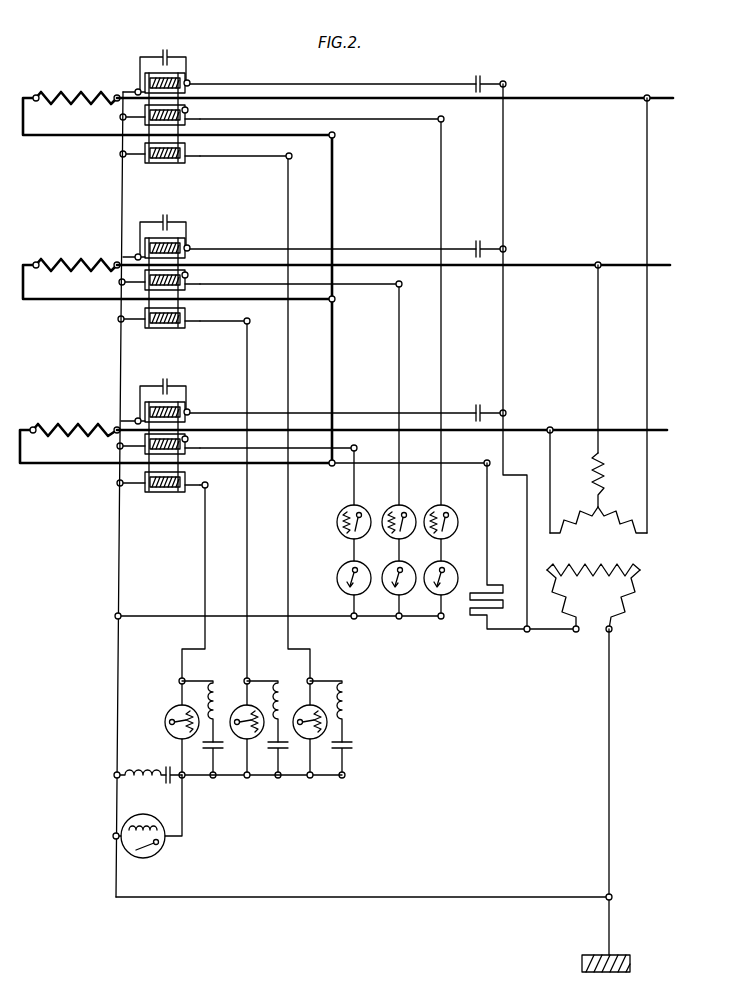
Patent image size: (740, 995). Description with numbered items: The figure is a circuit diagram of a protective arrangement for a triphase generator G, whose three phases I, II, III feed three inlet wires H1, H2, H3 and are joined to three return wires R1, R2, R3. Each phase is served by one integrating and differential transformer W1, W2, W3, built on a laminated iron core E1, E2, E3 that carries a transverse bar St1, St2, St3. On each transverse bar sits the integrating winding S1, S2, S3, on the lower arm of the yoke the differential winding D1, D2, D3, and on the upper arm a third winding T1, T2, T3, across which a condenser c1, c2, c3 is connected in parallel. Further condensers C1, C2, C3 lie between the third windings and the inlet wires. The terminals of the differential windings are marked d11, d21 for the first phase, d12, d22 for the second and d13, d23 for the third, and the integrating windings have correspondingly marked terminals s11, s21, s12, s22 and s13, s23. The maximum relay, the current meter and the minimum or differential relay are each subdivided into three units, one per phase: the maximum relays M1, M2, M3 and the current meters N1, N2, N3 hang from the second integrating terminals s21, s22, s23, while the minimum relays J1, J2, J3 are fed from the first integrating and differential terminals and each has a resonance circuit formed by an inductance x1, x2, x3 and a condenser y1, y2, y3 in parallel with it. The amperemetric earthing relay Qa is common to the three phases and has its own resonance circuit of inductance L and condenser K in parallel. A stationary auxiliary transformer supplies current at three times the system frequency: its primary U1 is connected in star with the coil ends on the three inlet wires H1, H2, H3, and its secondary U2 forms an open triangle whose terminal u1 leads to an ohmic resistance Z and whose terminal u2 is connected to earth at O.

The triphase generator G is at (176, 494).
The generator phase I is at (76, 89).
The generator phase II is at (76, 256).
The generator phase III is at (75, 421).
The condenser c1 is at (167, 55).
The condenser c2 is at (163, 227).
The condenser c3 is at (163, 391).
The third winding T1 is at (189, 81).
The third winding T2 is at (165, 242).
The third winding T3 is at (164, 406).
The integrating and differential transformer W1 is at (333, 90).
The integrating and differential transformer W2 is at (333, 255).
The integrating and differential transformer W3 is at (333, 419).
The integrating winding S1 is at (188, 110).
The integrating winding S2 is at (167, 277).
The integrating winding S3 is at (166, 441).
The transverse bar St1 is at (186, 120).
The transverse bar St2 is at (201, 292).
The transverse bar St3 is at (201, 456).
The differential winding D1 is at (182, 160).
The differential winding D2 is at (165, 330).
The differential winding D3 is at (164, 494).
The laminated iron core E1 is at (149, 160).
The laminated iron core E2 is at (151, 295).
The laminated iron core E3 is at (151, 459).
The terminal of integrating winding s11 is at (120, 117).
The terminal of integrating winding s12 is at (105, 286).
The terminal of integrating winding s13 is at (103, 450).
The terminal of differential winding d11 is at (120, 154).
The terminal of differential winding d12 is at (104, 321).
The terminal of differential winding d13 is at (103, 485).
The terminal of integrating winding s21 is at (438, 122).
The terminal of integrating winding s22 is at (397, 287).
The terminal of integrating winding s23 is at (357, 450).
The terminal of differential winding d21 is at (286, 159).
The terminal of differential winding d22 is at (246, 324).
The terminal of differential winding d23 is at (208, 488).
The return wire R1 is at (312, 137).
The return wire R2 is at (305, 301).
The return wire R3 is at (312, 465).
The condenser C1 is at (481, 74).
The condenser C2 is at (481, 239).
The condenser C3 is at (481, 403).
The inlet wire H1 is at (548, 97).
The inlet wire H2 is at (540, 264).
The inlet wire H3 is at (537, 429).
The maximum relay M1 is at (447, 507).
The maximum relay M2 is at (405, 507).
The maximum relay M3 is at (360, 507).
The current meter N1 is at (428, 592).
The current meter N2 is at (386, 592).
The current meter N3 is at (341, 592).
The ohmic resistance Z is at (508, 605).
The primary of stationary transformer U1 is at (609, 315).
The secondary of stationary transformer U2 is at (604, 596).
The terminal of secondary u1 is at (578, 632).
The terminal of secondary u2 is at (612, 632).
The minimum or differential relay J1 is at (297, 712).
The minimum or differential relay J2 is at (234, 712).
The minimum or differential relay J3 is at (168, 712).
The inductance of resonance circuit x1 is at (343, 682).
The inductance of resonance circuit x2 is at (279, 682).
The inductance of resonance circuit x3 is at (214, 682).
The condenser of resonance circuit y1 is at (351, 750).
The condenser of resonance circuit y2 is at (287, 750).
The condenser of resonance circuit y3 is at (222, 750).
The inductance of resonance circuit L is at (144, 768).
The condenser of resonance circuit K is at (166, 782).
The amperemetric earthing relay Qa is at (167, 845).
The earth O is at (585, 956).